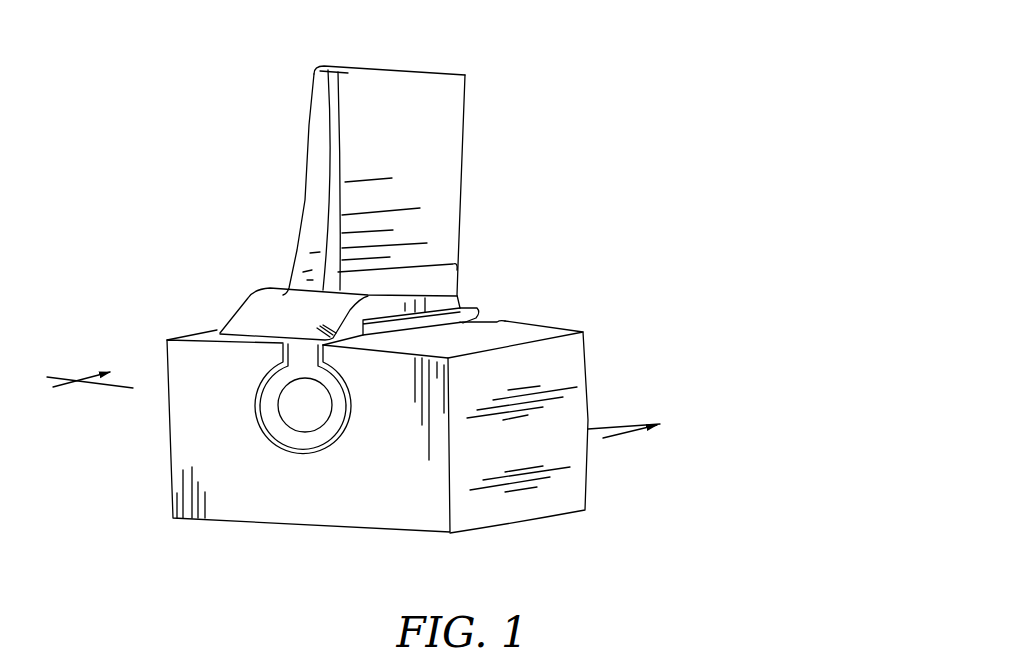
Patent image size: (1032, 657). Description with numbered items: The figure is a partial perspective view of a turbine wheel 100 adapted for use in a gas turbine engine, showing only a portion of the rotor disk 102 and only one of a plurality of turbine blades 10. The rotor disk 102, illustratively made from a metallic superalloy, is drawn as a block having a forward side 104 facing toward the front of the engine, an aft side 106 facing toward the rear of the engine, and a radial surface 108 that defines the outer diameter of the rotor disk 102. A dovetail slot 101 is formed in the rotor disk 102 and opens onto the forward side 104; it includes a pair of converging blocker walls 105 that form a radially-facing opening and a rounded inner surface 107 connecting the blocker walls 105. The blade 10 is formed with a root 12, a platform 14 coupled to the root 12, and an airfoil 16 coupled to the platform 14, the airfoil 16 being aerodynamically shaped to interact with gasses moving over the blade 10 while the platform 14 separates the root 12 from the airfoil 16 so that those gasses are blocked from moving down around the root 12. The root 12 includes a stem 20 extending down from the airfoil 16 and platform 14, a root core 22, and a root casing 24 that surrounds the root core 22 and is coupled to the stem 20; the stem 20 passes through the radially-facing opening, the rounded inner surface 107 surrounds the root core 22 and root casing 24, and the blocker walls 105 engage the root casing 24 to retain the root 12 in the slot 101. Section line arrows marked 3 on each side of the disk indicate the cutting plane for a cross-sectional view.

The turbine wheel 100 is at (492, 299).
The turbine blade 10 is at (375, 209).
The root 12 is at (238, 353).
The platform 14 is at (247, 292).
The airfoil 16 is at (292, 178).
The stem 20 is at (291, 466).
The root core 22 is at (302, 397).
The root casing 24 is at (278, 425).
The dovetail slot 101 is at (337, 466).
The rotor disk 102 is at (423, 428).
The forward side 104 is at (430, 521).
The blocker walls 105 is at (340, 353).
The aft side 106 is at (594, 487).
The rounded inner surface 107 is at (286, 456).
The radial surface 108 is at (542, 335).
The section line 3- 3 is at (352, 421).